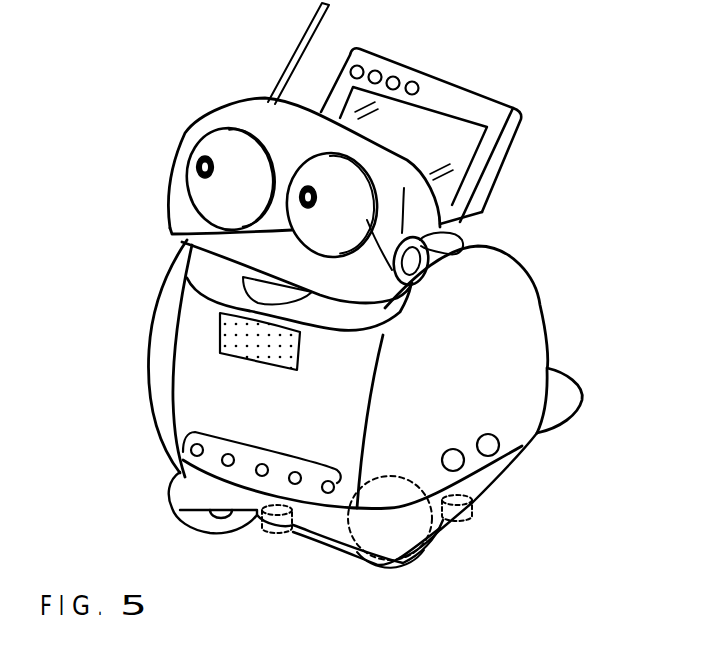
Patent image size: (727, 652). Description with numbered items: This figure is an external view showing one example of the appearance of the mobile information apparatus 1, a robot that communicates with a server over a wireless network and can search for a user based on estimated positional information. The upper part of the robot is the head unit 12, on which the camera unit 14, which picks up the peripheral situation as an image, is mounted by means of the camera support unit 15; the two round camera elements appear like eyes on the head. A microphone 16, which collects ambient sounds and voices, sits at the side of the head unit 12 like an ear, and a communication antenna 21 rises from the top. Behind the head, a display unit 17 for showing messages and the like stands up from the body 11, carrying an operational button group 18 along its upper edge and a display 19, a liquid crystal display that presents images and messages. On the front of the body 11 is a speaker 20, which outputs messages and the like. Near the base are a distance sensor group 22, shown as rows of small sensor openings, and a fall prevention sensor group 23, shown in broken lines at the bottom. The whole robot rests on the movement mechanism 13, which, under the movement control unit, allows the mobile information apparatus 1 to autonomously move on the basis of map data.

The mobile information apparatus 1 is at (568, 81).
The body 11 is at (536, 291).
The head unit 12 is at (170, 156).
The movement mechanism 13 is at (382, 557).
The camera unit 14 is at (306, 188).
The camera support unit 15 is at (295, 243).
The microphone 16 is at (421, 281).
The display unit 17 is at (502, 171).
The operational button group 18 is at (435, 81).
The display 19 is at (468, 132).
The speaker 20 is at (302, 360).
The communication antenna 21 is at (318, 5).
The distance sensor group 22 is at (273, 451).
The fall prevention sensor group 23 is at (460, 518).